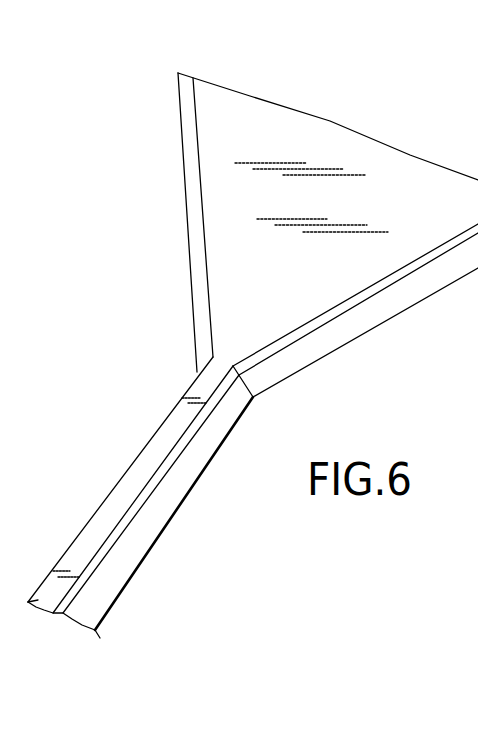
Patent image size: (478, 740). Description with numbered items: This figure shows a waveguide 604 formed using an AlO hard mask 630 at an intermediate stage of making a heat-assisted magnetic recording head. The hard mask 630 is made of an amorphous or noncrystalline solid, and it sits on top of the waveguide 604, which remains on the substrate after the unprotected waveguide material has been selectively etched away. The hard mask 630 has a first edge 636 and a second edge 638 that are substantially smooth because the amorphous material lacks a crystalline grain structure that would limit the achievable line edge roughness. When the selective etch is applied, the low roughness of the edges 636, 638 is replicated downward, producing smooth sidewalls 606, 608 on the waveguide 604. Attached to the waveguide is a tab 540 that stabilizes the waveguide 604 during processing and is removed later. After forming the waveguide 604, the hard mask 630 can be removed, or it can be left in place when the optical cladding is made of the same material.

The tab 540 is at (260, 122).
The waveguide 604 is at (100, 525).
The sidewall 606 is at (208, 436).
The sidewall 608 is at (130, 465).
The hard mask 630 is at (130, 483).
The edge 636 is at (107, 550).
The edge 638 is at (80, 530).